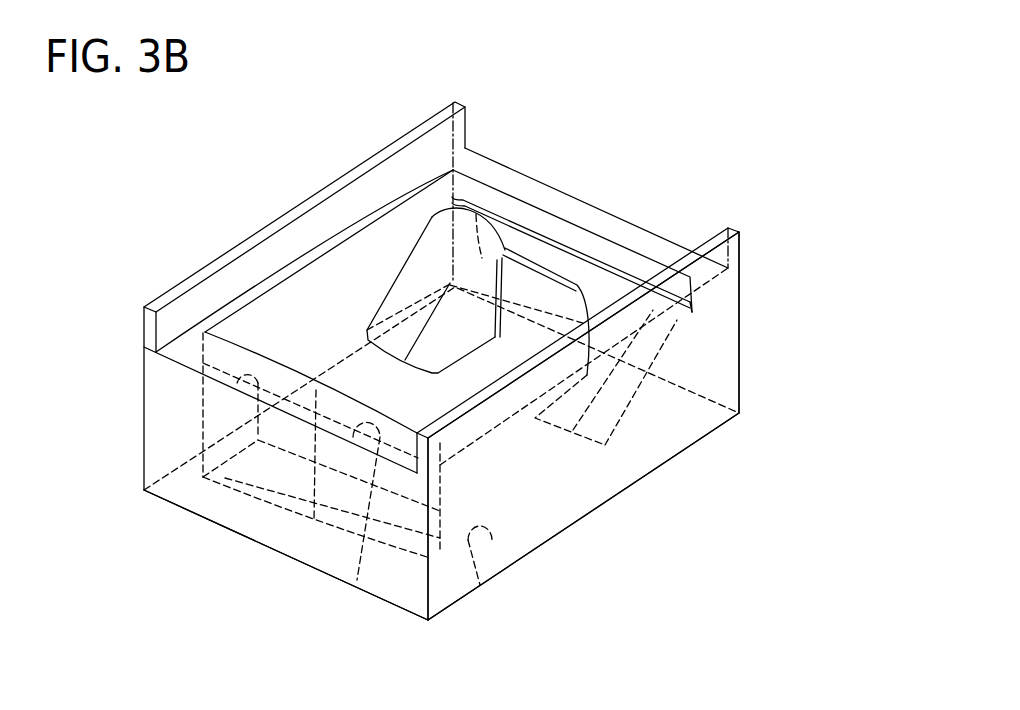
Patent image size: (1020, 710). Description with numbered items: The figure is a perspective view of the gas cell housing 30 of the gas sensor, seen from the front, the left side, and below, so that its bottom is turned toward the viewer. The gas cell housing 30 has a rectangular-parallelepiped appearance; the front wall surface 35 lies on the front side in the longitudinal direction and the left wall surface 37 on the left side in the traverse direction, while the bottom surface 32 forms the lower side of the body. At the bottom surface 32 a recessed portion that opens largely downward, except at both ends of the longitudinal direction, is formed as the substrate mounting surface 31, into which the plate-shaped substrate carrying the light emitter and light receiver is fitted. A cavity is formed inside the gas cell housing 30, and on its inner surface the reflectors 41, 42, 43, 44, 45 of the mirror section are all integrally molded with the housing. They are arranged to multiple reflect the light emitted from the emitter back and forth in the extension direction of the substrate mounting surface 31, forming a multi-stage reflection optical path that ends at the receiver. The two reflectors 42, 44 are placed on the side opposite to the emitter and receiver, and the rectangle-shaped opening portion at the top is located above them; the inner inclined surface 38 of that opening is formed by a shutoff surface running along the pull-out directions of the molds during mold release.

The gas cell housing 30 is at (192, 514).
The substrate mounting surface 31 is at (593, 217).
The bottom surface 32 is at (433, 125).
The front wall surface 35 is at (277, 537).
The left wall surface 37 is at (713, 342).
The inner inclined surface 38 is at (492, 540).
The reflector 41 is at (607, 297).
The reflector 42 is at (353, 437).
The reflector 43 is at (545, 293).
The reflector 44 is at (237, 383).
The reflector 45 is at (482, 258).